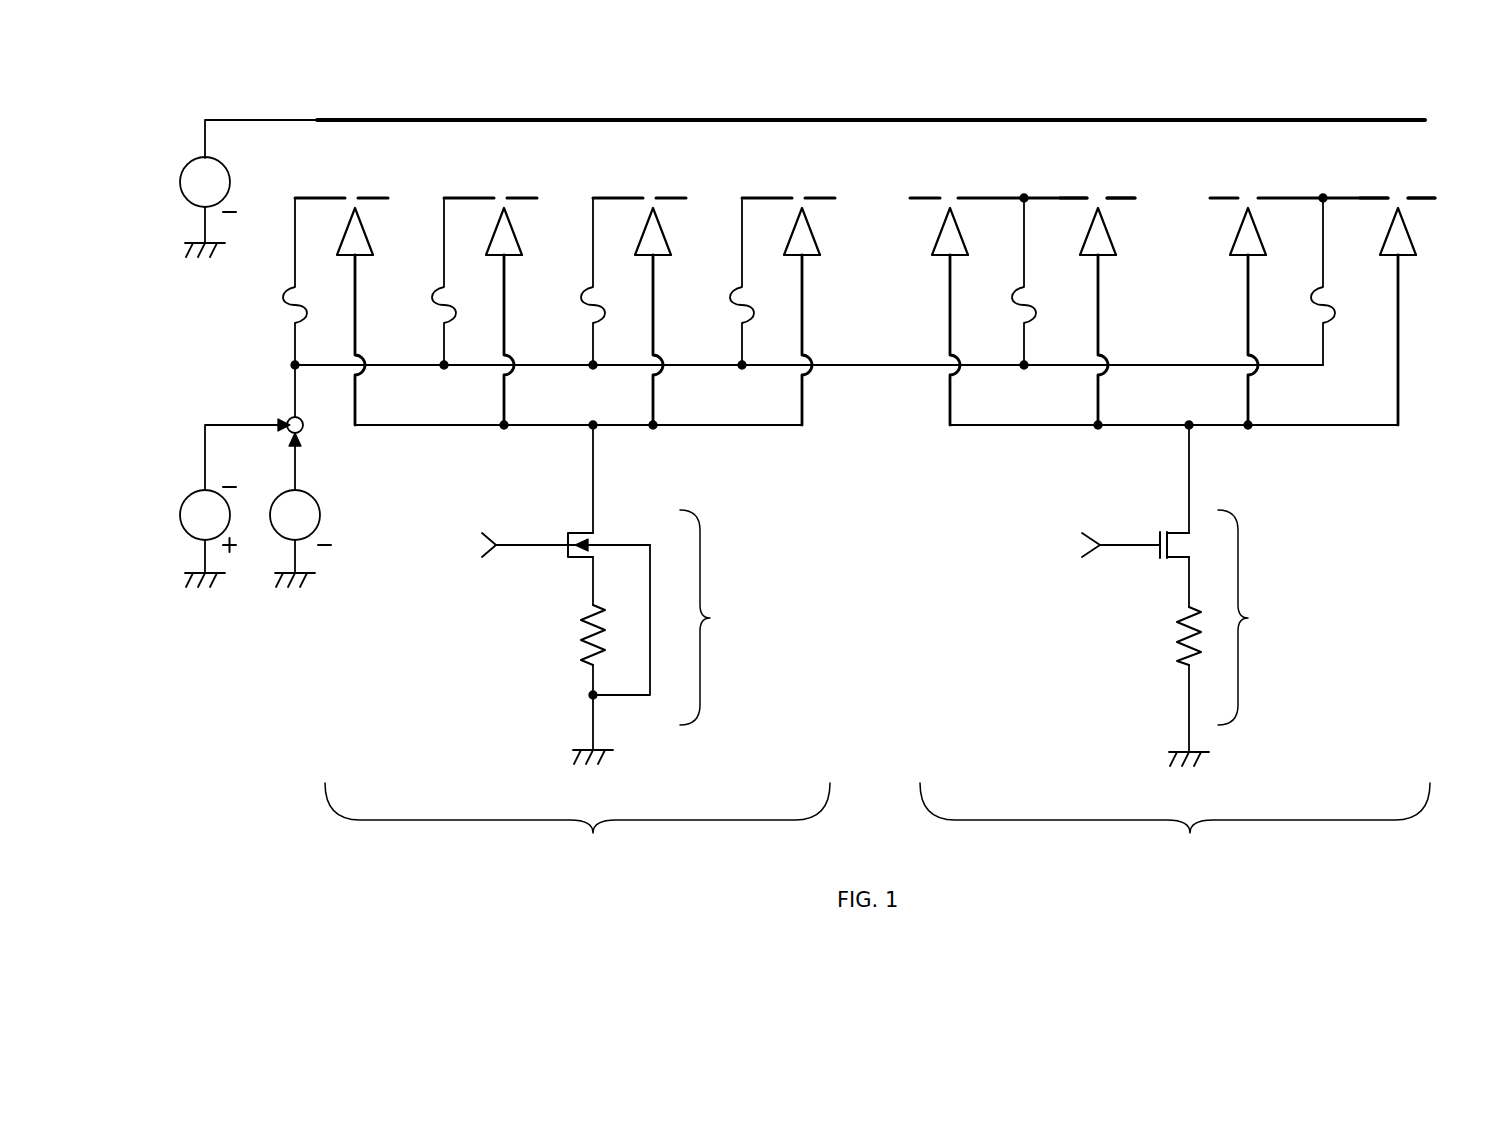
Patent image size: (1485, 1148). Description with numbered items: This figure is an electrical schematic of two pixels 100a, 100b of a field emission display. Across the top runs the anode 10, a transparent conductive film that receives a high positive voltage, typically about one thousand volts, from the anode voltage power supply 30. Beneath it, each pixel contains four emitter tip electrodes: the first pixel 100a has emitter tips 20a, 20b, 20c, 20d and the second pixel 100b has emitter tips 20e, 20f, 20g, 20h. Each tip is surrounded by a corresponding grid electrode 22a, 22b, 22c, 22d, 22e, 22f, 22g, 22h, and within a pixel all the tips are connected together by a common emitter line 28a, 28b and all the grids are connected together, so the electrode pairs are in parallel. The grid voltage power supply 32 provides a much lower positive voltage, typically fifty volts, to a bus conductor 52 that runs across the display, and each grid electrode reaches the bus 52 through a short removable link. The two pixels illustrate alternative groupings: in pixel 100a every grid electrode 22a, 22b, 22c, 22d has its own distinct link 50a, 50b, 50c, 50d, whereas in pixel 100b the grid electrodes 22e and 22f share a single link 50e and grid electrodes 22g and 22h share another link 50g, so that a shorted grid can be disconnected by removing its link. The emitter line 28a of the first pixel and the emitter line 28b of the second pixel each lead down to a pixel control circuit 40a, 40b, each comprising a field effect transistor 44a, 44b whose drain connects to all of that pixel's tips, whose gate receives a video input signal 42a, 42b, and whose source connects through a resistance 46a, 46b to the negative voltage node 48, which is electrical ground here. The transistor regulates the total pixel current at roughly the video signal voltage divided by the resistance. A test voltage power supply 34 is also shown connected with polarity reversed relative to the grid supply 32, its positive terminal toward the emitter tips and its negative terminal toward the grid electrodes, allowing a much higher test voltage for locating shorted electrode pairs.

The anode 10 is at (653, 118).
The anode voltage power supply 30 is at (193, 194).
The grid voltage power supply 32 is at (283, 527).
The test voltage power supply 34 is at (193, 527).
The emitter tip electrode 20a is at (368, 238).
The emitter tip electrode 20b is at (517, 238).
The emitter tip electrode 20c is at (666, 238).
The emitter tip electrode 20d is at (815, 238).
The emitter tip electrode 20e is at (935, 236).
The emitter tip electrode 20f is at (1111, 238).
The emitter tip electrode 20g is at (1233, 236).
The emitter tip electrode 20h is at (1411, 238).
The grid electrode 22a is at (371, 198).
The grid electrode 22b is at (520, 198).
The grid electrode 22c is at (669, 198).
The grid electrode 22d is at (818, 198).
The grid electrode 22e is at (966, 198).
The grid electrode 22f is at (1114, 198).
The grid electrode 22g is at (1264, 198).
The grid electrode 22h is at (1414, 198).
The removable link 50a is at (287, 307).
The removable link 50b is at (436, 307).
The removable link 50c is at (585, 307).
The removable link 50d is at (734, 307).
The removable link 50e is at (1016, 307).
The removable link 50g is at (1314, 307).
The bus conductor 52 is at (292, 367).
The emitter line 28a is at (715, 427).
The emitter line 28b is at (1312, 427).
The pixel control circuit 40a is at (673, 575).
The pixel control circuit 40b is at (1242, 575).
The video input signal 42a is at (493, 546).
The video input signal 42b is at (1090, 546).
The field effect transistor 44a is at (580, 560).
The field effect transistor 44b is at (1176, 560).
The resistance 46a is at (585, 633).
The resistance 46b is at (1182, 633).
The negative voltage node 48 is at (572, 762).
The pixel 100a is at (577, 824).
The pixel 100b is at (1175, 824).